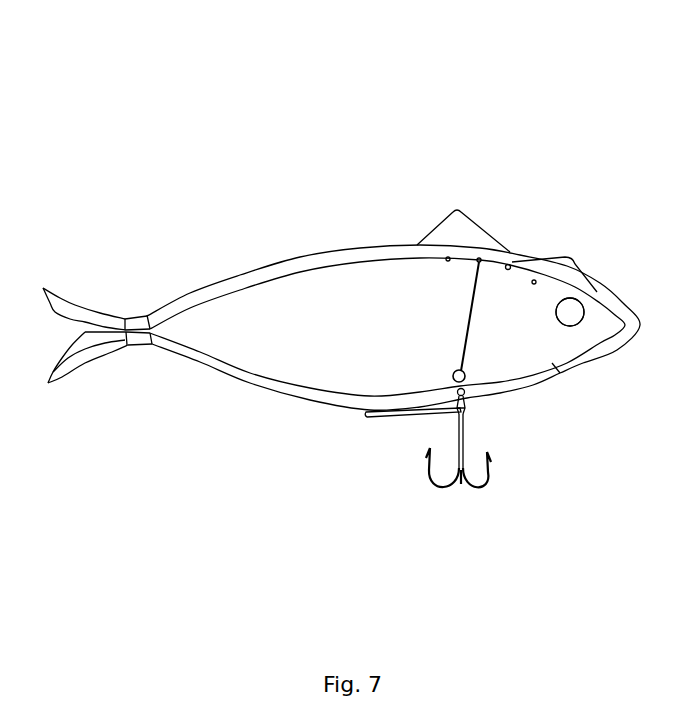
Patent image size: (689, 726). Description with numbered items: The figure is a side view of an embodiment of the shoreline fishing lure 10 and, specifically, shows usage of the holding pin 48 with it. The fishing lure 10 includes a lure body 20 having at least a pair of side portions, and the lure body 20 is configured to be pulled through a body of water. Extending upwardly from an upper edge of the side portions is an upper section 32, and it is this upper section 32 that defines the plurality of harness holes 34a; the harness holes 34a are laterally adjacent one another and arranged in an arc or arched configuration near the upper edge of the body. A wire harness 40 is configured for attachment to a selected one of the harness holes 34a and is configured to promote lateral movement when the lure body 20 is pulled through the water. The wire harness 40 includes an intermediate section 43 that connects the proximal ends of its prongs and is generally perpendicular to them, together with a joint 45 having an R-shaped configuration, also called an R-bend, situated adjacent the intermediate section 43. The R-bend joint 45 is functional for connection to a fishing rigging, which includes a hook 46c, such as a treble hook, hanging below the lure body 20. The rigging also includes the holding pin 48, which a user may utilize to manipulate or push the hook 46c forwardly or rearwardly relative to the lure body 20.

The fishing lure 10 is at (386, 135).
The lure body 20 is at (242, 322).
The upper section 32 is at (460, 223).
The harness holes 34a is at (510, 265).
The wire harness 40 is at (508, 307).
The intermediate section 43 is at (472, 350).
The joint 45 is at (455, 369).
The hook 46c is at (490, 483).
The holding pin 48 is at (377, 418).